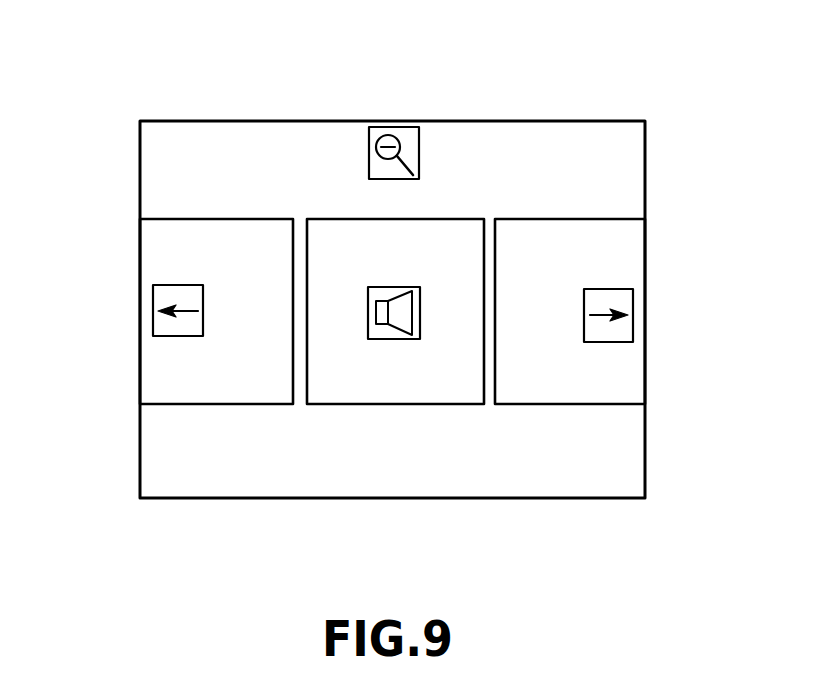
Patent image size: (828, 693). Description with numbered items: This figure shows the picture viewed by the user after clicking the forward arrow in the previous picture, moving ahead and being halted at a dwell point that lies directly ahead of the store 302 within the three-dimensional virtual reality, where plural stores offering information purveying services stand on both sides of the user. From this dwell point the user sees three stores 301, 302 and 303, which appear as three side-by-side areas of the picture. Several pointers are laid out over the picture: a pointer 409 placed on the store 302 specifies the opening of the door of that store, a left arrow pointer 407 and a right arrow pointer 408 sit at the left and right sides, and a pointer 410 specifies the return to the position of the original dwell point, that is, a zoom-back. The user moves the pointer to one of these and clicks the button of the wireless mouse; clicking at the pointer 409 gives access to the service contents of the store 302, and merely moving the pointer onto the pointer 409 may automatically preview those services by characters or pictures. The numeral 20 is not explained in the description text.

The display screen 20 is at (645, 172).
The store 301 is at (237, 233).
The store 302 is at (330, 233).
The store 303 is at (571, 238).
The left arrow pointer 407 is at (168, 296).
The right arrow pointer 408 is at (618, 331).
The pointer specifying the opening of the door of the store 409 is at (393, 339).
The pointer specifying return to the original dwell point (zoom-back) 410 is at (407, 138).